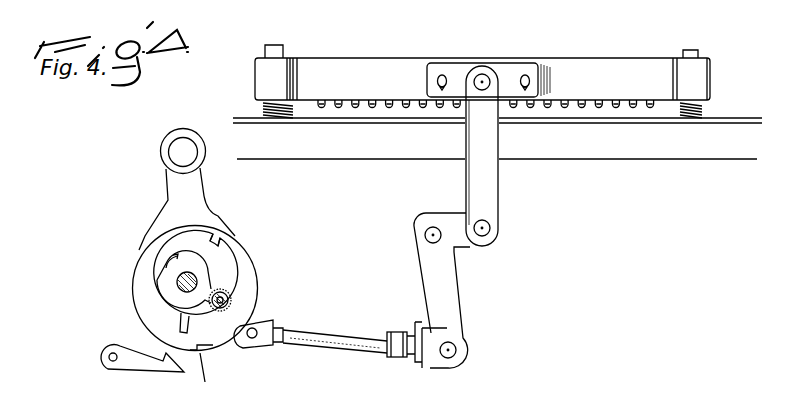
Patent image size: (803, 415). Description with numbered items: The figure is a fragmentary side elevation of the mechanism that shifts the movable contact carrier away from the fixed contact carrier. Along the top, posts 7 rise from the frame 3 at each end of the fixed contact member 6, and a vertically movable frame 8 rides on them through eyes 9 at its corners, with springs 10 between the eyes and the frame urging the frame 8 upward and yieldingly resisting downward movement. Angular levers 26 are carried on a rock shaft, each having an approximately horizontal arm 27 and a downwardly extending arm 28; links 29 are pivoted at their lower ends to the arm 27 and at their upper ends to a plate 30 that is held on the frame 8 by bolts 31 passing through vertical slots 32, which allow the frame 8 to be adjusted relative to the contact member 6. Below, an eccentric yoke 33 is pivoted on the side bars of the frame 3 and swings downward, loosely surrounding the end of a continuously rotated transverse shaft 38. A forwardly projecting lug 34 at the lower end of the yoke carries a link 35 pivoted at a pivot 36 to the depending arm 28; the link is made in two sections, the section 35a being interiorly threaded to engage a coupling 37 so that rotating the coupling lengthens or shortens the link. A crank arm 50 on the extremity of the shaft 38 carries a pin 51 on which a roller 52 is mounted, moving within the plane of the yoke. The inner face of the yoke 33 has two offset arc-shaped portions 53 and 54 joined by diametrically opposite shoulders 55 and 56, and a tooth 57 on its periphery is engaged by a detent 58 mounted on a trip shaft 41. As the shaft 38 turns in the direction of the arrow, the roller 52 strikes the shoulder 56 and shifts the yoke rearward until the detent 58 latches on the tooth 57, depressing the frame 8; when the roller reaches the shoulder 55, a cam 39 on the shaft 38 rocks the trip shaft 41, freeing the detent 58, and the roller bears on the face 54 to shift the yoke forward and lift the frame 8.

The frame 3 is at (685, 152).
The contact member 6 is at (722, 121).
The posts 7 is at (706, 44).
The frame 8 is at (631, 63).
The eyes 9 is at (684, 82).
The springs 10 is at (258, 105).
The angular levers 26 is at (423, 247).
The arm 27 is at (466, 249).
The arm 28 is at (460, 322).
The links 29 is at (492, 196).
The plate 30 is at (526, 63).
The bolts 31 is at (536, 82).
The slots 32 is at (528, 90).
The eccentric yoke 33 is at (171, 201).
The lug 34 is at (256, 324).
The link 35 is at (335, 330).
The section 35a is at (422, 367).
The pivot 36 is at (467, 357).
The coupling 37 is at (402, 322).
The shaft 38 is at (206, 270).
The cam 39 is at (162, 260).
The trip shaft 41 is at (113, 352).
The crank arm 50 is at (197, 282).
The pin 51 is at (217, 305).
The roller 52 is at (228, 294).
The arc-shaped portion 53 is at (156, 282).
The arc-shaped portion 54 is at (247, 292).
The shoulder 55 is at (225, 234).
The shoulder 56 is at (186, 333).
The tooth 57 is at (213, 374).
The detent 58 is at (183, 375).